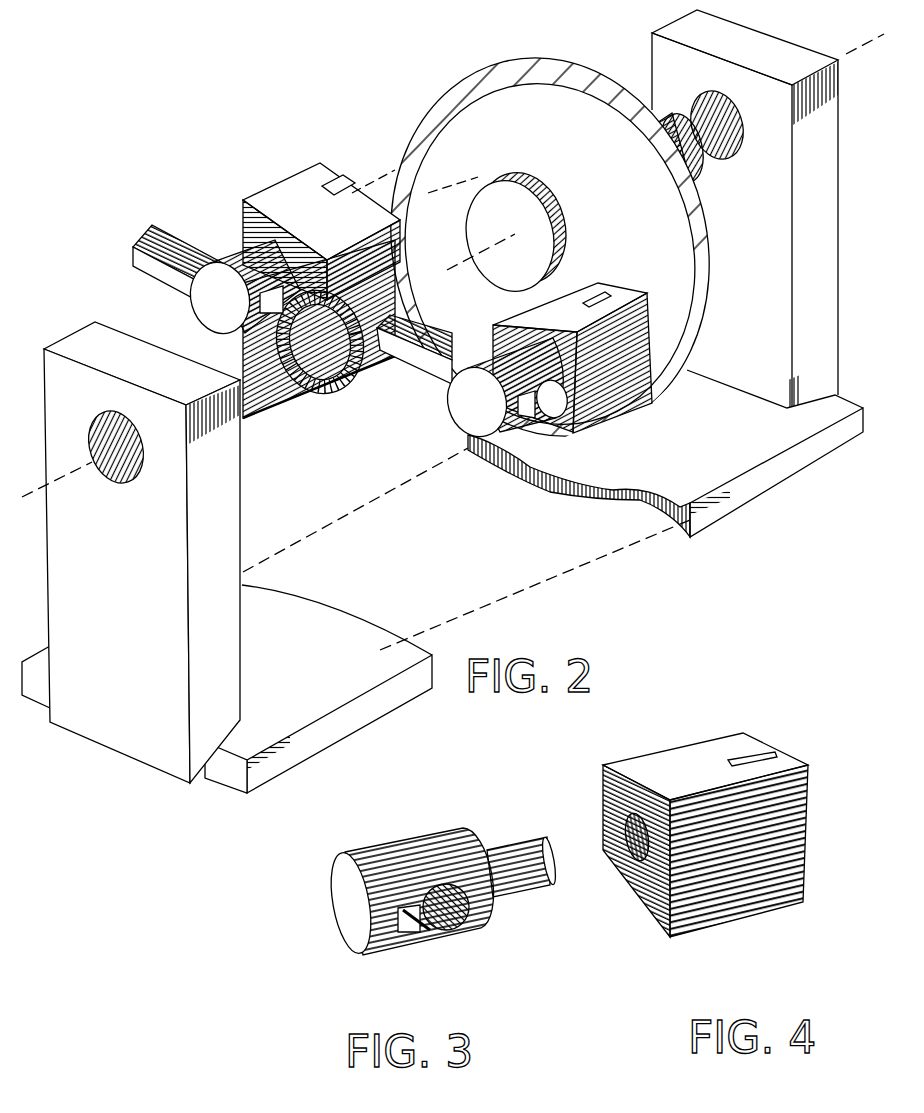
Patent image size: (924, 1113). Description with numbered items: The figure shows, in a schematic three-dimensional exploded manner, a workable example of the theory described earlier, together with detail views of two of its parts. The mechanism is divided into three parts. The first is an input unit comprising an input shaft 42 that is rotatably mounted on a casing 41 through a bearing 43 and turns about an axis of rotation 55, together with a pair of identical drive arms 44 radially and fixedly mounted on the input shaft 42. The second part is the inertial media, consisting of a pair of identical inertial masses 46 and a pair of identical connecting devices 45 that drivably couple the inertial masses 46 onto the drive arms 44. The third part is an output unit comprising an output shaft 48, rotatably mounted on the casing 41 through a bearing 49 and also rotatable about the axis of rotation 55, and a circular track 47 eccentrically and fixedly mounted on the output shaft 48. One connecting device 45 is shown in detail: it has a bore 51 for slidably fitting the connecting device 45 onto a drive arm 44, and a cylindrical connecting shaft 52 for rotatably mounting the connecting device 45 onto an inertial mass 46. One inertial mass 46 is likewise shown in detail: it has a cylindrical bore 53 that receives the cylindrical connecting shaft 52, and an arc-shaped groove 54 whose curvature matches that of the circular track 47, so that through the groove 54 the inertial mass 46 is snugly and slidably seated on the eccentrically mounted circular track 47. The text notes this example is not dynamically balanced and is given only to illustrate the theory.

In FIG. 2, the casing 41 is at (735, 507).
In FIG. 2, the input shaft 42 is at (266, 410).
In FIG. 2, the bearing 43 is at (73, 342).
In FIG. 2, the drive arms 44 is at (188, 226).
In FIG. 2, the connecting device 45 is at (214, 318).
In FIG. 3, the connecting device 45 is at (397, 840).
In FIG. 2, the inertial mass 46 is at (300, 188).
In FIG. 4, the inertial mass 46 is at (690, 757).
In FIG. 2, the circular track 47 is at (697, 293).
In FIG. 2, the output shaft 48 is at (693, 182).
In FIG. 2, the bearing 49 is at (793, 62).
In FIG. 3, the bore 51 is at (447, 937).
In FIG. 3, the cylindrical connecting shaft 52 is at (497, 847).
In FIG. 4, the cylindrical bore 53 is at (627, 860).
In FIG. 2, the arc-shaped groove 54 is at (347, 186).
In FIG. 4, the arc-shaped groove 54 is at (778, 753).
In FIG. 2, the axis of rotation 55 is at (853, 54).